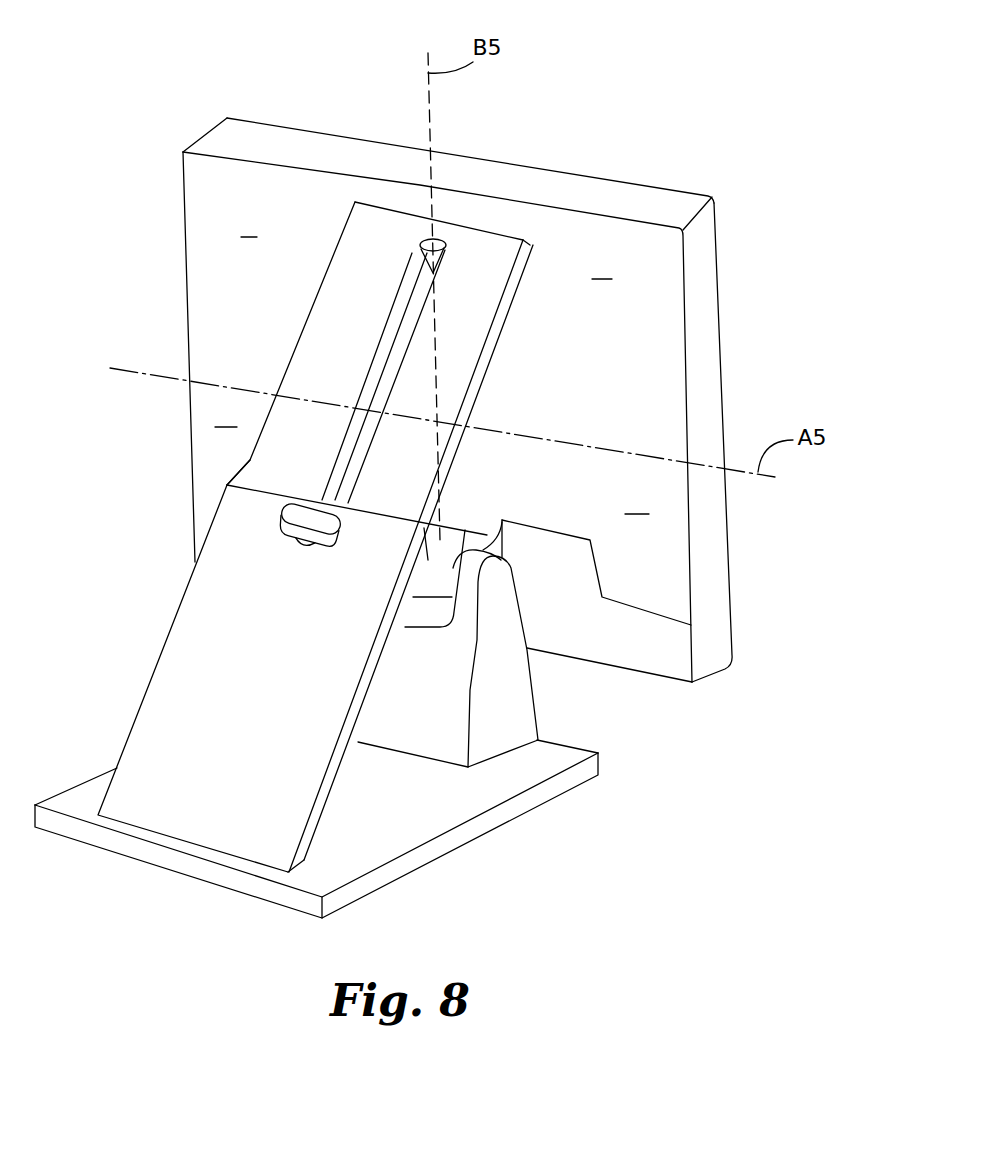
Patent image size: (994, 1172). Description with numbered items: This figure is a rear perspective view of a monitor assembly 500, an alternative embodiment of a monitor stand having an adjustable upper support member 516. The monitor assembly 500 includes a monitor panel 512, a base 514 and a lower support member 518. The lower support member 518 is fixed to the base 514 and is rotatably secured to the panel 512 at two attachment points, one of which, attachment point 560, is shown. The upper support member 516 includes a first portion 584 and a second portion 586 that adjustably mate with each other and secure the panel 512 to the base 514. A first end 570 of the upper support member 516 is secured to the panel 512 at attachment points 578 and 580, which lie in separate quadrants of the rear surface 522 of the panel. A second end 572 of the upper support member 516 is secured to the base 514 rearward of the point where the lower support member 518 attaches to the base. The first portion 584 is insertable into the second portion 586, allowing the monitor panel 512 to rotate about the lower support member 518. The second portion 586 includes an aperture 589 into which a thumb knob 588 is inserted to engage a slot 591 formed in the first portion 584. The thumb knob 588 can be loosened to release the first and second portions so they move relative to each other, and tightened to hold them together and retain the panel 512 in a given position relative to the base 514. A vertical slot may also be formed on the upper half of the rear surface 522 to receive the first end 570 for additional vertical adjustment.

The monitor assembly 500 is at (654, 89).
The monitor panel 512 is at (263, 140).
The base 514 is at (437, 817).
The upper support member 516 is at (447, 556).
The lower support member 518 is at (515, 712).
The rear surface 522 is at (663, 282).
The attachment point 560 is at (465, 530).
The first end 570 is at (472, 247).
The second end 572 is at (180, 817).
The attachment point 578 is at (355, 202).
The attachment point 580 is at (528, 270).
The first portion 584 is at (478, 307).
The second portion 586 is at (280, 813).
The thumb knob 588 is at (280, 521).
The aperture 589 is at (310, 553).
The slot 591 is at (380, 357).